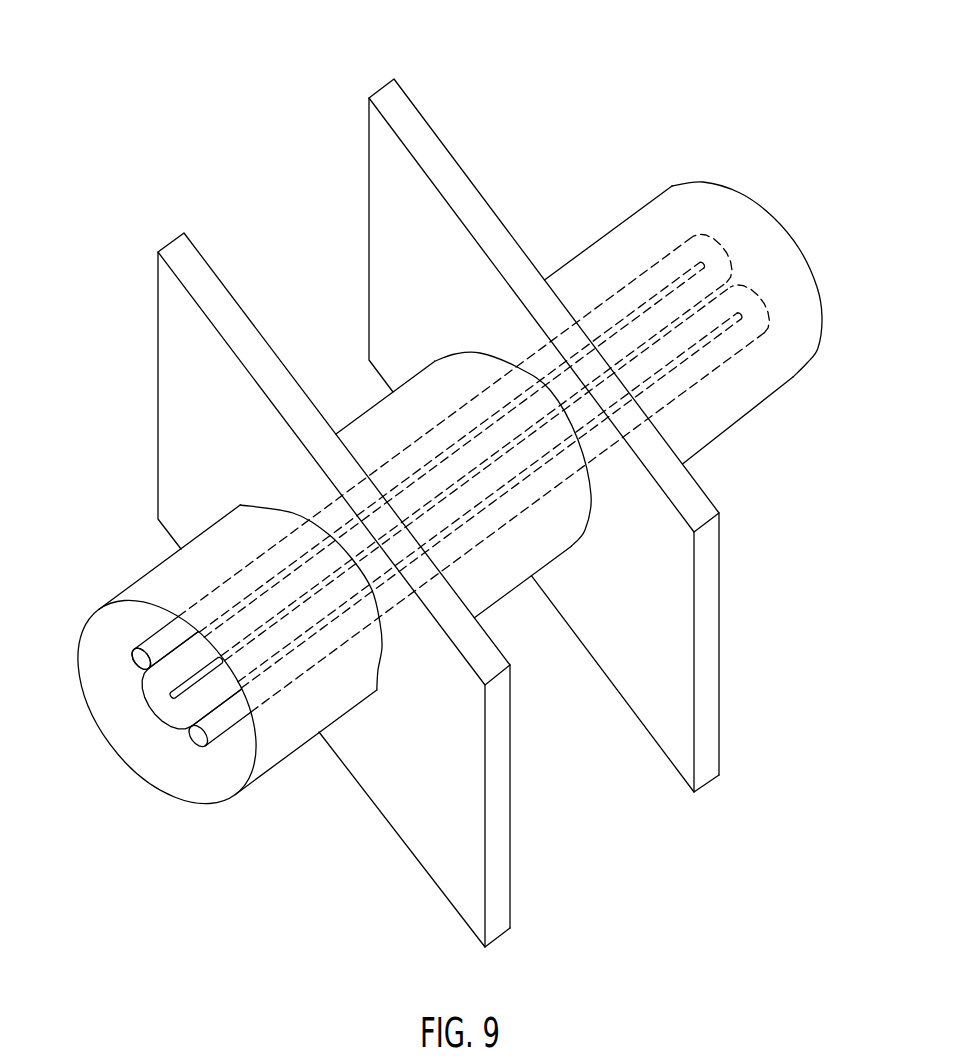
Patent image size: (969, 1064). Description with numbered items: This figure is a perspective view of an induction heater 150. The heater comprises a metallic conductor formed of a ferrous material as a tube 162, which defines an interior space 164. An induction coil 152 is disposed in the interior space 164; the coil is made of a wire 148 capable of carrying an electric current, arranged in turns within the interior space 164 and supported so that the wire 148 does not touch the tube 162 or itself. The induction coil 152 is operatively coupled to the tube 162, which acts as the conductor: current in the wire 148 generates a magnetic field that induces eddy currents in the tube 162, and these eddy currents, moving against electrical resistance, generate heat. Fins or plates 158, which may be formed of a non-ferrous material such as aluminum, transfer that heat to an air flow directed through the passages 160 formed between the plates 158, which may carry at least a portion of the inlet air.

The wire 148 is at (135, 664).
The induction heater 150 is at (632, 98).
The induction coil 152 is at (132, 637).
The fins or plates 158 is at (698, 505).
The passages 160 is at (602, 790).
The tube 162 is at (792, 373).
The interior space 164 is at (153, 735).